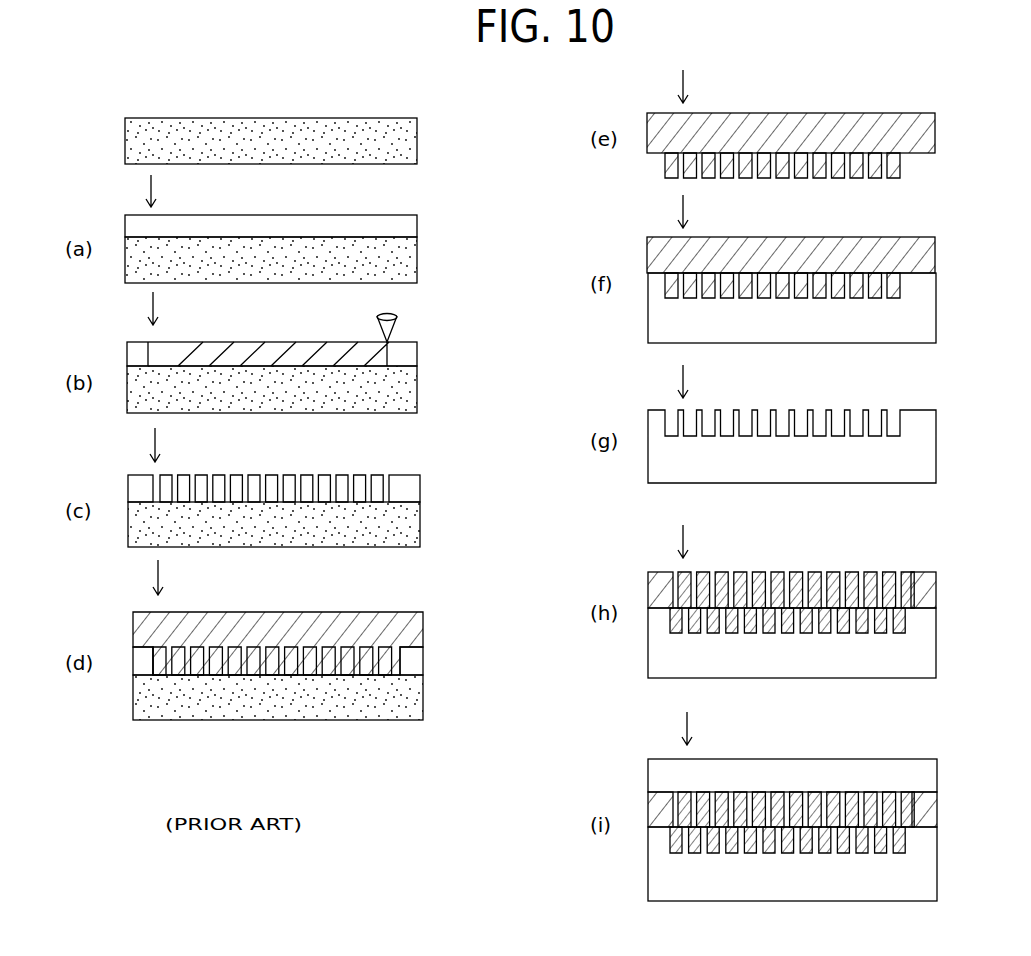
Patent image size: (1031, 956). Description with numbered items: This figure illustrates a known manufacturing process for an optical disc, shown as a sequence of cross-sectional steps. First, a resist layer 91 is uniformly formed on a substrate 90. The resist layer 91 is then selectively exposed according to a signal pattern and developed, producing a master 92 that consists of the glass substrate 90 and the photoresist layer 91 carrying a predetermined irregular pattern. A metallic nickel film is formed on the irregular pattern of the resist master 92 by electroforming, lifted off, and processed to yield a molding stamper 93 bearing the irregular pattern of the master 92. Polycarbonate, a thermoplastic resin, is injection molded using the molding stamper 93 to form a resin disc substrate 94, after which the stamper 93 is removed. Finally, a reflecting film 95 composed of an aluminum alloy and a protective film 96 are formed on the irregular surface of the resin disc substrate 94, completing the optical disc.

The substrate 90 is at (417, 126).
The resist layer 91 is at (417, 222).
The master 92 is at (440, 517).
The molding stamper 93 is at (423, 622).
The resin disc substrate 94 is at (936, 296).
The reflecting film 95 is at (936, 590).
The protective film 96 is at (937, 762).